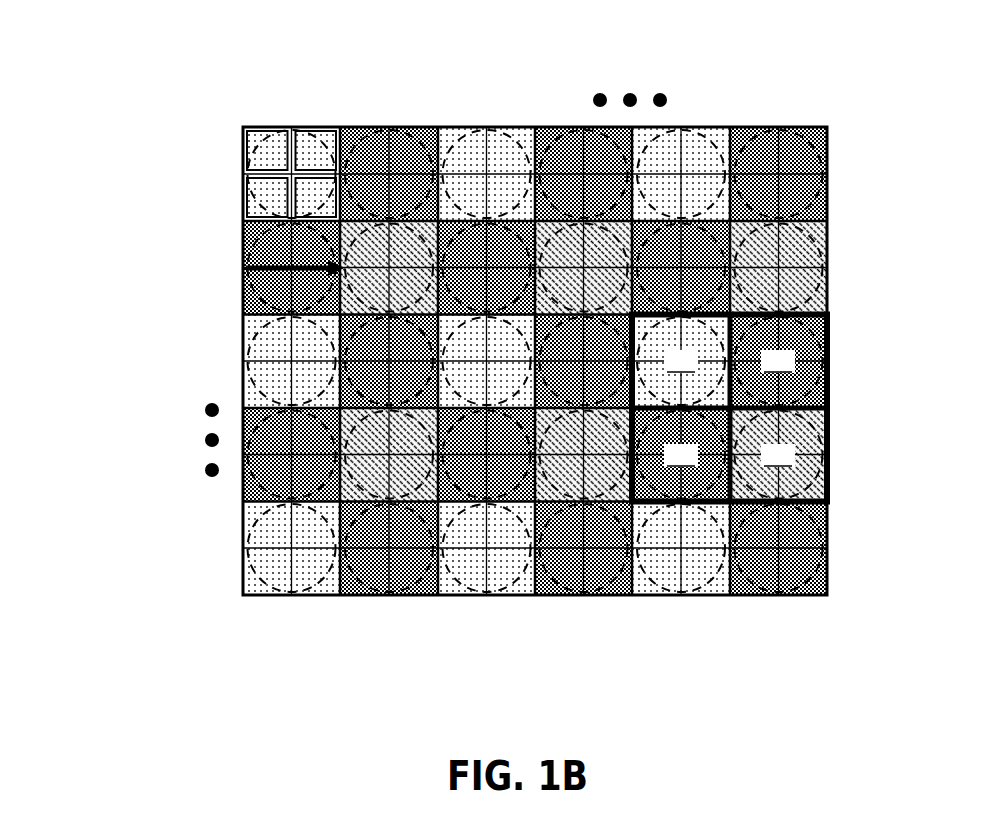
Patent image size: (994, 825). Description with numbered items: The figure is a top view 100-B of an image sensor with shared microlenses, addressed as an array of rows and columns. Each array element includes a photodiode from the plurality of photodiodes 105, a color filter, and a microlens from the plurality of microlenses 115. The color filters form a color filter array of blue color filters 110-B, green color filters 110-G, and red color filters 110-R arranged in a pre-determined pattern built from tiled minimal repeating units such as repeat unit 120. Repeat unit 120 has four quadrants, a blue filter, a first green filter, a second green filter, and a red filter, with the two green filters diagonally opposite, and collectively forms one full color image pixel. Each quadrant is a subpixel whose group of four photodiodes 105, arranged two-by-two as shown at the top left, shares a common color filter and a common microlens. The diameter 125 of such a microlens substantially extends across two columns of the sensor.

The top view of image sensor 100-B is at (83, 63).
The plurality of photodiodes 105 is at (243, 126).
The blue color filters 110-B is at (707, 125).
The green color filters 110-G is at (828, 125).
The red color filters 110-R is at (828, 219).
The plurality of microlenses 115 is at (831, 409).
The repeat unit 120 is at (828, 311).
The diameter 125 is at (300, 251).